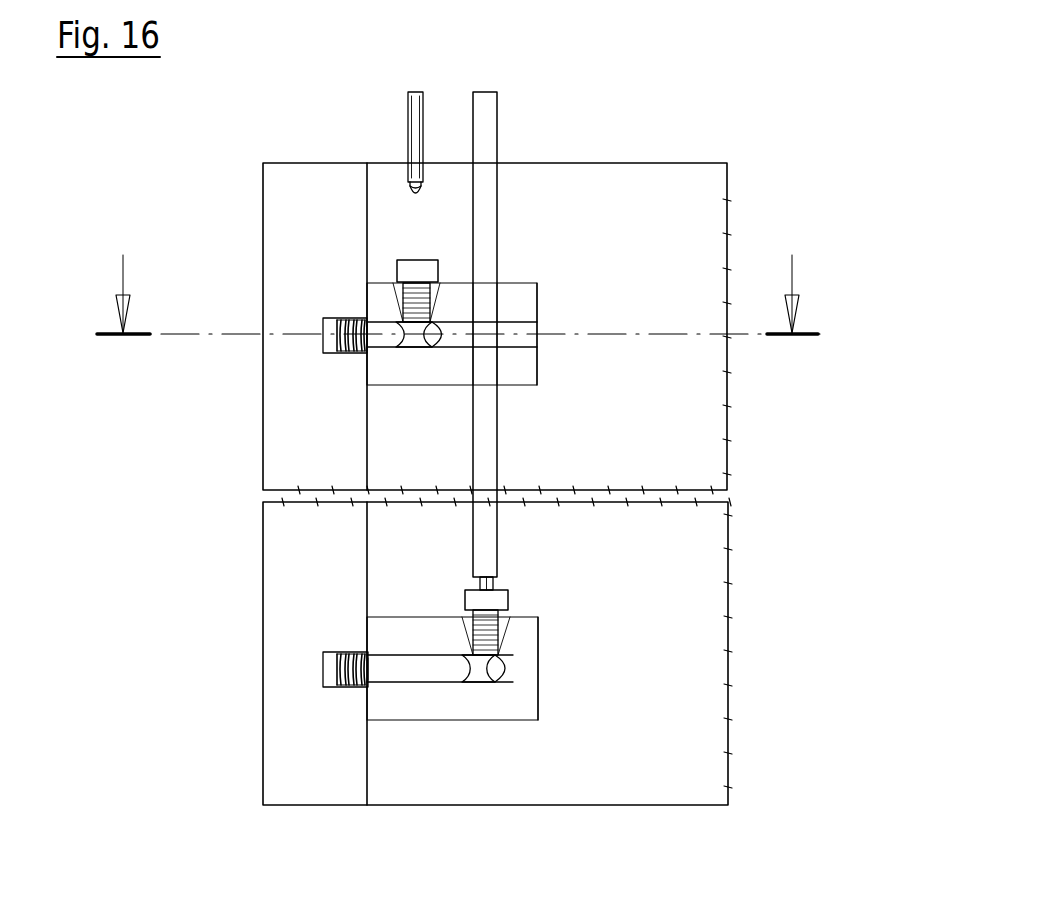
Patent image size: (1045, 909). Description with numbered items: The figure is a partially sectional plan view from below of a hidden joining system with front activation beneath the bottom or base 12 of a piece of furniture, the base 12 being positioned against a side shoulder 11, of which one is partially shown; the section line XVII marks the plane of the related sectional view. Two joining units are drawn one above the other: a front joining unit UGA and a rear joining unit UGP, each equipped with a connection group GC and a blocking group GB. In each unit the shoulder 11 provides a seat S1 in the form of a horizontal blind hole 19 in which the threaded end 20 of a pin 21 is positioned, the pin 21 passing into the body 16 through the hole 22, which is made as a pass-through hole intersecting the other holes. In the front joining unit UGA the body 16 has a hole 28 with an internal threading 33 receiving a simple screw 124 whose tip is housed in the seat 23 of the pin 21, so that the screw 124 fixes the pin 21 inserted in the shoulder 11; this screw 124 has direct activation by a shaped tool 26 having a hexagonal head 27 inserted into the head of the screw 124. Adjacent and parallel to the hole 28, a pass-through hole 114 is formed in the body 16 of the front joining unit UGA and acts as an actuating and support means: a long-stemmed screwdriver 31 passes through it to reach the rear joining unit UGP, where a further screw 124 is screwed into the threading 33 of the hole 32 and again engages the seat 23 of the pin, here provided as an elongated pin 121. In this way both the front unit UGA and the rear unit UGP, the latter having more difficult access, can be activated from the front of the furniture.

The side shoulder 11 is at (270, 193).
The bottom or base 12 is at (705, 199).
The body 16 is at (552, 304).
The horizontal blind hole 19 is at (318, 348).
The threaded end 20 is at (343, 354).
The pin 21 is at (382, 344).
The hole 22 is at (536, 344).
The seat 23 is at (415, 349).
The shaped tool 26 is at (410, 133).
The hexagonal head 27 is at (410, 190).
The hole 28 is at (407, 307).
The long-stemmed screwdriver 31 is at (490, 443).
The hole 32 is at (486, 646).
The threading 33 is at (405, 313).
The pass-through hole 114 is at (493, 283).
The elongated pin 121 is at (388, 676).
The screw 124 is at (405, 302).
The blocking group GB is at (399, 230).
The connection group GC is at (308, 372).
The seat S1 is at (319, 306).
The front joining unit UGA is at (550, 412).
The rear joining unit UGP is at (523, 730).
The section line XVII- XVII is at (459, 294).